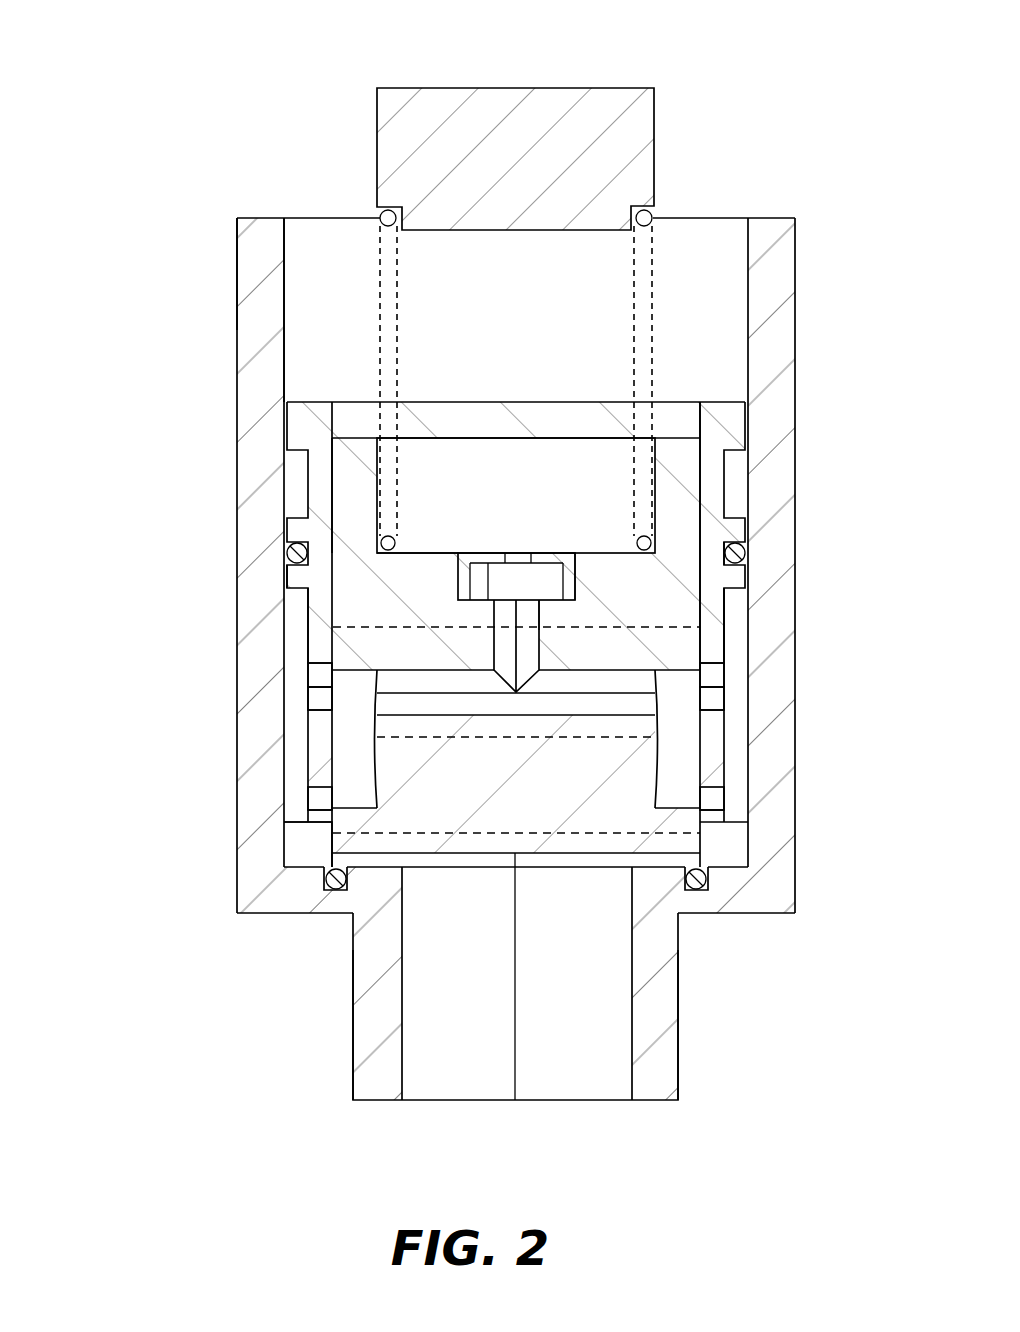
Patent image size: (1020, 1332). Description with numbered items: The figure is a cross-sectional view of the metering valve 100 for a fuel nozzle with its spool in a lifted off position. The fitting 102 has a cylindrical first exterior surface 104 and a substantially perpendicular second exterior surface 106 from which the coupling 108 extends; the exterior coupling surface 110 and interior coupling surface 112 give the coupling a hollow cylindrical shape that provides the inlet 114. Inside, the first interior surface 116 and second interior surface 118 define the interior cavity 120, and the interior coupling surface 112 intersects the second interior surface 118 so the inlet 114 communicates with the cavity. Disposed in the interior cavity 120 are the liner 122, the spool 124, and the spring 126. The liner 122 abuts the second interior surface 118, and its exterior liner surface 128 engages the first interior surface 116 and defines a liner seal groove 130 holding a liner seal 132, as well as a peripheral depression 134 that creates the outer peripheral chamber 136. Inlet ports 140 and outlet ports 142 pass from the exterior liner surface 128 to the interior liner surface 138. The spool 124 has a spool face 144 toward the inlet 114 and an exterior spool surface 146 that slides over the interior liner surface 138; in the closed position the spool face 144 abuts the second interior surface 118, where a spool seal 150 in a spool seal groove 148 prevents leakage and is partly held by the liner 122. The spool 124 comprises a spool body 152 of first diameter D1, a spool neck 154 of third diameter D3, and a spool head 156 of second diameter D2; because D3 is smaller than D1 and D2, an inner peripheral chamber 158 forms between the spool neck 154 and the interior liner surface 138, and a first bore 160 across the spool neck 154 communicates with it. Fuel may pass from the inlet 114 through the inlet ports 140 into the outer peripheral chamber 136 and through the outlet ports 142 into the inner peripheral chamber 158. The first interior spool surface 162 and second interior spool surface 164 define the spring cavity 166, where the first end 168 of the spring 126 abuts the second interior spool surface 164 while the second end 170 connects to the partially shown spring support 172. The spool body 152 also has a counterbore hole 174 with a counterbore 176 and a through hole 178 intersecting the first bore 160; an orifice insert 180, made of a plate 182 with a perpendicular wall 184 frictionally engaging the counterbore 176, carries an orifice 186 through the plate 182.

The metering valve 100 is at (148, 86).
The fitting 102 is at (247, 422).
The first exterior surface 104 is at (232, 292).
The second exterior surface 106 is at (255, 915).
The coupling 108 is at (373, 1038).
The exterior coupling surface 110 is at (355, 1050).
The interior coupling surface 112 is at (625, 1050).
The inlet 114 is at (542, 990).
The first interior surface 116 is at (288, 288).
The second interior surface 118 is at (300, 862).
The interior cavity 120 is at (718, 380).
The liner 122 is at (712, 488).
The spool 124 is at (355, 620).
The spring 126 is at (645, 320).
The exterior liner surface 128 is at (282, 568).
The liner seal groove 130 is at (740, 548).
The liner seal 132 is at (741, 560).
The peripheral depression 134 is at (728, 620).
The outer peripheral chamber 136 is at (282, 732).
The interior liner surface 138 is at (333, 498).
The inlet ports 140 is at (296, 803).
The outlet ports 142 is at (296, 688).
The spool face 144 is at (487, 868).
The exterior spool surface 146 is at (330, 602).
The spool seal groove 148 is at (698, 882).
The spool seal 150 is at (327, 880).
The spool body 152 is at (596, 562).
The spool neck 154 is at (393, 790).
The spool head 156 is at (687, 843).
The inner peripheral chamber 158 is at (688, 762).
The first bore 160 is at (588, 705).
The first interior spool surface 162 is at (377, 443).
The second interior spool surface 164 is at (428, 553).
The spring cavity 166 is at (488, 462).
The first end 168 is at (648, 551).
The second end 170 is at (402, 208).
The spring support 172 is at (500, 103).
The counterbore hole 174 is at (548, 579).
The counterbore 176 is at (463, 572).
The through hole 178 is at (503, 652).
The orifice insert 180 is at (580, 612).
The plate 182 is at (538, 553).
The wall 184 is at (580, 598).
The orifice 186 is at (515, 547).
The first diameter D1 is at (398, 627).
The second diameter D2 is at (395, 833).
The third diameter D3 is at (530, 740).